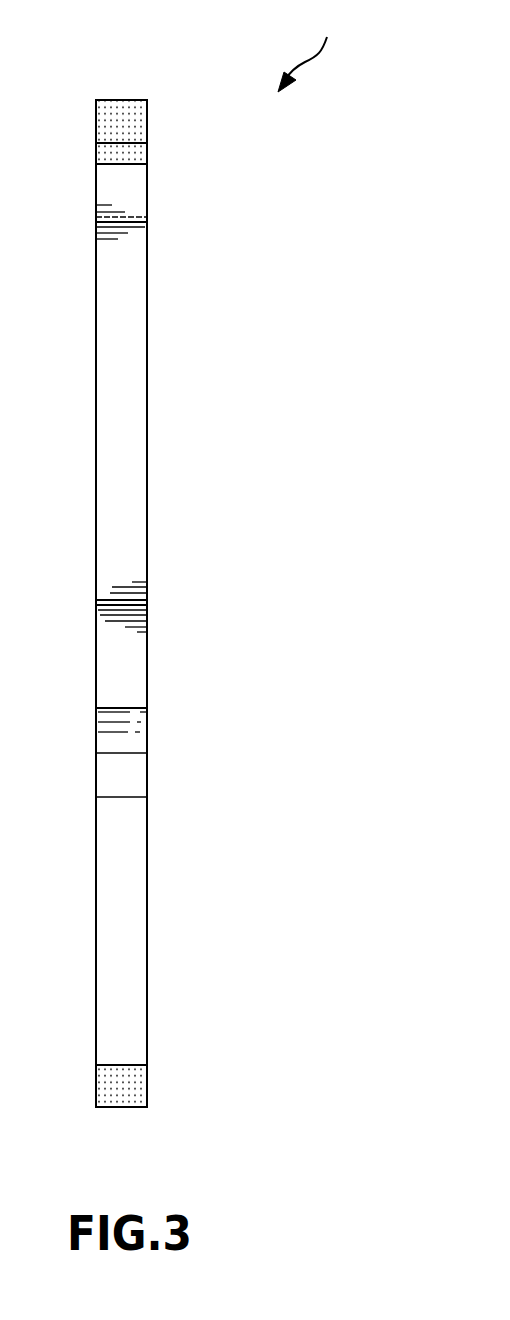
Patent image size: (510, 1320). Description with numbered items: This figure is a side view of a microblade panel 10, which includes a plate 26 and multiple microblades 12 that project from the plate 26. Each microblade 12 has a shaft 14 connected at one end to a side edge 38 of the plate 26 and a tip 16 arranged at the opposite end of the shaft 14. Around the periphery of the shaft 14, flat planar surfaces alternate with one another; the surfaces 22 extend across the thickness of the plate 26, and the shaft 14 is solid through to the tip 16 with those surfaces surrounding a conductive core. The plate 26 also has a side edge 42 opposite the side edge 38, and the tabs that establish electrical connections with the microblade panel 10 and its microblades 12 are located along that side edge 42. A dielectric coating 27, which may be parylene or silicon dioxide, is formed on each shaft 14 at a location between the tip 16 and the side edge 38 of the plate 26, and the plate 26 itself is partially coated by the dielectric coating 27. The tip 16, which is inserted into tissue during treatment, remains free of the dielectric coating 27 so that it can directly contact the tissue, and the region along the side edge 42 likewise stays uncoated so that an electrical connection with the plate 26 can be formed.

The microblade panel 10 is at (310, 47).
The side edge 42 is at (121, 100).
The plate 26 is at (125, 291).
The dielectric coating 27 is at (125, 524).
The side edge 38 is at (137, 727).
The microblade 12 is at (130, 833).
The shaft 14 is at (130, 909).
The tip 16 is at (130, 1082).
The surface 22 is at (121, 1095).